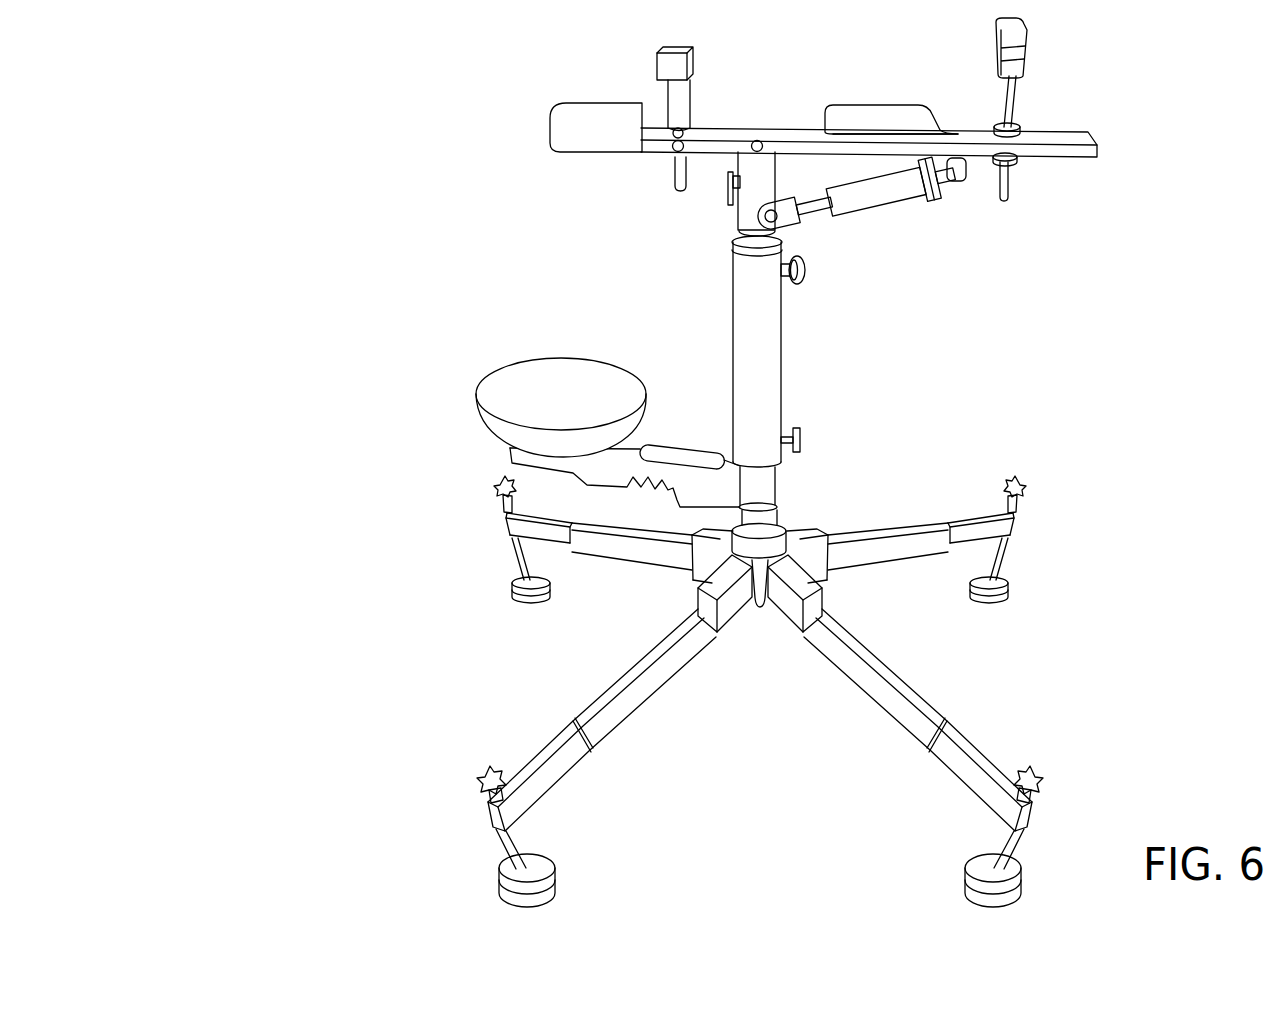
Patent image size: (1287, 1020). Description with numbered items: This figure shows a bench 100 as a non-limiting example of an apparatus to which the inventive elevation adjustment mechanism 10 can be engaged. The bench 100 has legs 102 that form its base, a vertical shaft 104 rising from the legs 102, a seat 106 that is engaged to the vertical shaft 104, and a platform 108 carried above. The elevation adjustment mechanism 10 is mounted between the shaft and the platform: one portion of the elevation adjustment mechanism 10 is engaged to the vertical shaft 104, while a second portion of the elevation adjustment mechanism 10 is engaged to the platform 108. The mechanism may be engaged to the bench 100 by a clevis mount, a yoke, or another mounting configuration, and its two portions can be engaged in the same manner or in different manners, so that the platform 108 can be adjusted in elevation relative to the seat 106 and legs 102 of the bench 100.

The bench 100 is at (719, 462).
The elevation adjustment mechanism 10 is at (862, 243).
The platform 108 is at (1113, 17).
The vertical shaft 104 is at (781, 357).
The seat 106 is at (531, 360).
The legs 102 is at (617, 548).